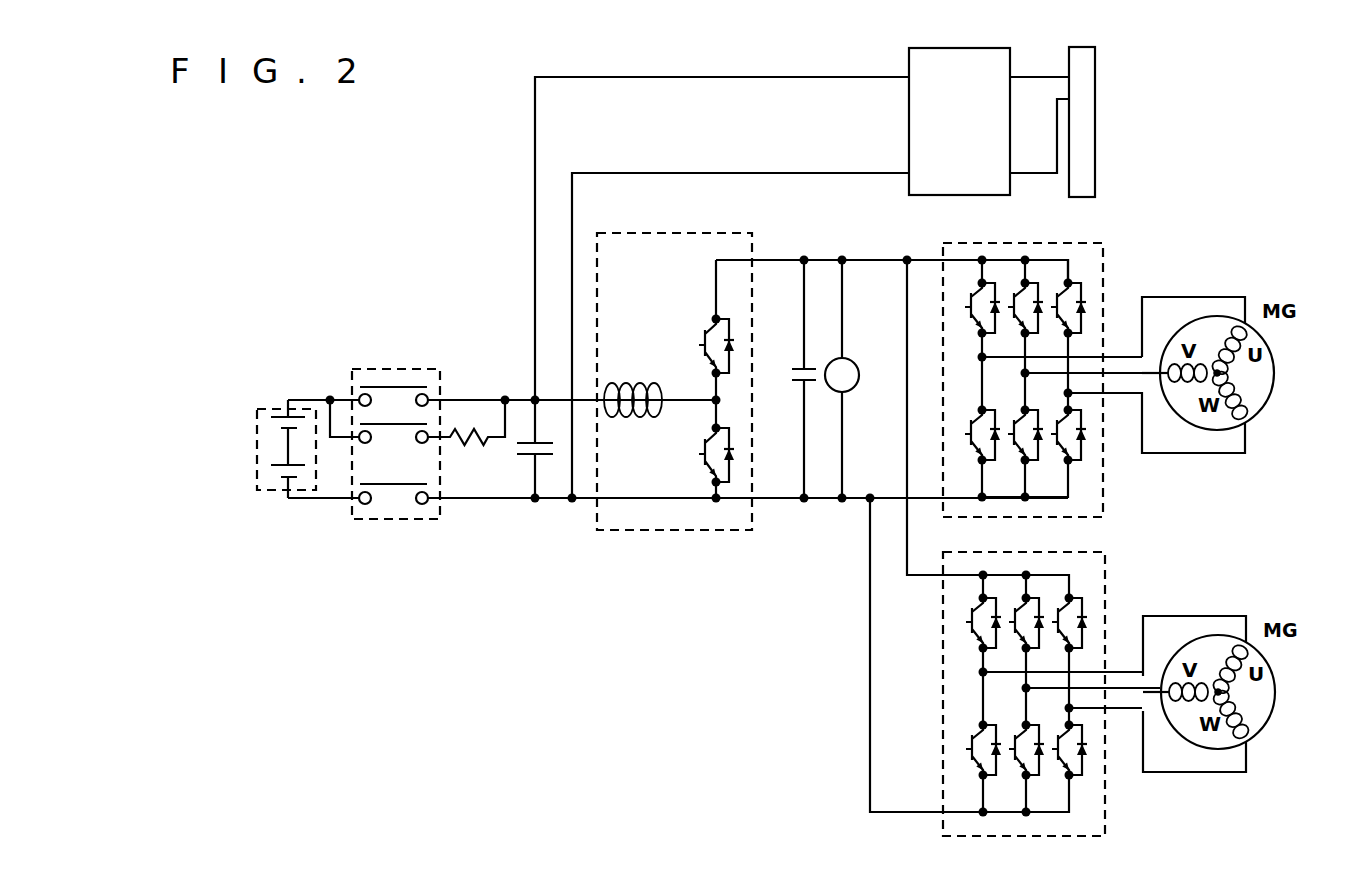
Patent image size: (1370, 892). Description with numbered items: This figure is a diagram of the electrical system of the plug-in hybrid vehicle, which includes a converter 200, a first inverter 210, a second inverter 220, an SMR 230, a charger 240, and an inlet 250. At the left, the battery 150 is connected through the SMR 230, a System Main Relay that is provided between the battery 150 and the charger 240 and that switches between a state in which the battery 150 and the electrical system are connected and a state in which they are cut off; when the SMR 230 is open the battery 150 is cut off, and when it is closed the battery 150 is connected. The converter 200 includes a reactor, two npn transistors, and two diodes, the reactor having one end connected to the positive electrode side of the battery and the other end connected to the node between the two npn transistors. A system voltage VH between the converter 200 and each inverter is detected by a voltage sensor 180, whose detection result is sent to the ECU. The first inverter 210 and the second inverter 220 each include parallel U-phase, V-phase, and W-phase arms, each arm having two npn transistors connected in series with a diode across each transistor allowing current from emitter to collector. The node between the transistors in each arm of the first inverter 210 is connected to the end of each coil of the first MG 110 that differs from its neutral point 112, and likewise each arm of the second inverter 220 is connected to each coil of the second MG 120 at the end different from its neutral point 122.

The first MG 110 is at (1263, 410).
The neutral point 112 is at (1216, 371).
The second MG 120 is at (1263, 728).
The neutral point 122 is at (1217, 690).
The battery 150 is at (272, 408).
The voltage sensor 180 is at (850, 390).
The converter 200 is at (733, 233).
The first inverter 210 is at (1104, 470).
The second inverter 220 is at (1105, 790).
The SMR 230 is at (397, 366).
The charger 240 is at (909, 118).
The inlet 250 is at (1095, 126).